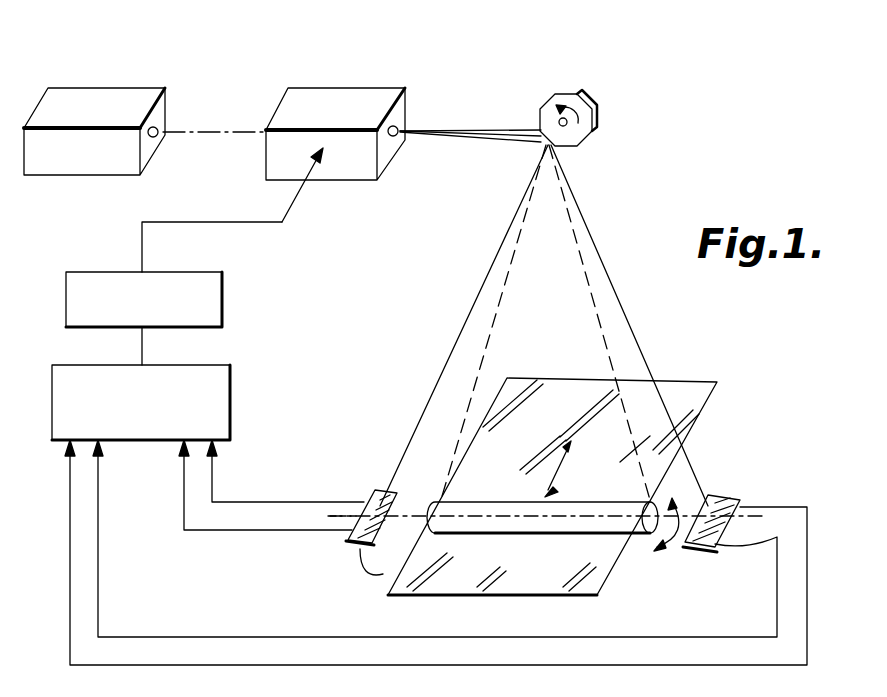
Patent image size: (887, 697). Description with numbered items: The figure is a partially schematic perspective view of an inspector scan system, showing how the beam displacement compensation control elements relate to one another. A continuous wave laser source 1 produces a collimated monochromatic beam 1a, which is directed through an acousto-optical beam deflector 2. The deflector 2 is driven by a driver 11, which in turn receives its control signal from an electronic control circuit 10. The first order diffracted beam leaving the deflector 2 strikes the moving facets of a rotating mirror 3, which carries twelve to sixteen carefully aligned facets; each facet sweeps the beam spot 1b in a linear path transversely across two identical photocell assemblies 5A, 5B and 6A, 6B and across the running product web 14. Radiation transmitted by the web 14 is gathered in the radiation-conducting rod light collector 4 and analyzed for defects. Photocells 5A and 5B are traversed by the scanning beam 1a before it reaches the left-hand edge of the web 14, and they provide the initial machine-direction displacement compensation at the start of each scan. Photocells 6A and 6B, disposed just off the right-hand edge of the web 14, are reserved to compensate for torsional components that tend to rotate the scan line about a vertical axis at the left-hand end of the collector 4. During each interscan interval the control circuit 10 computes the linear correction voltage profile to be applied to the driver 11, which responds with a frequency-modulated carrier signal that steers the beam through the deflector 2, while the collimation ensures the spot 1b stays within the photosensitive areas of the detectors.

The laser source 1 is at (158, 52).
The scanning beam 1a is at (206, 128).
The beam spot 1b is at (368, 502).
The acousto-optical beam deflector 2 is at (390, 66).
The rotating mirror 3 is at (596, 118).
The light collector 4 is at (446, 538).
The photocell 5A is at (376, 490).
The photocell 5B is at (390, 552).
The photocell 6A is at (738, 495).
The photocell 6B is at (723, 556).
The electronic control circuit 10 is at (214, 394).
The driver 11 is at (210, 307).
The web 14 is at (680, 403).